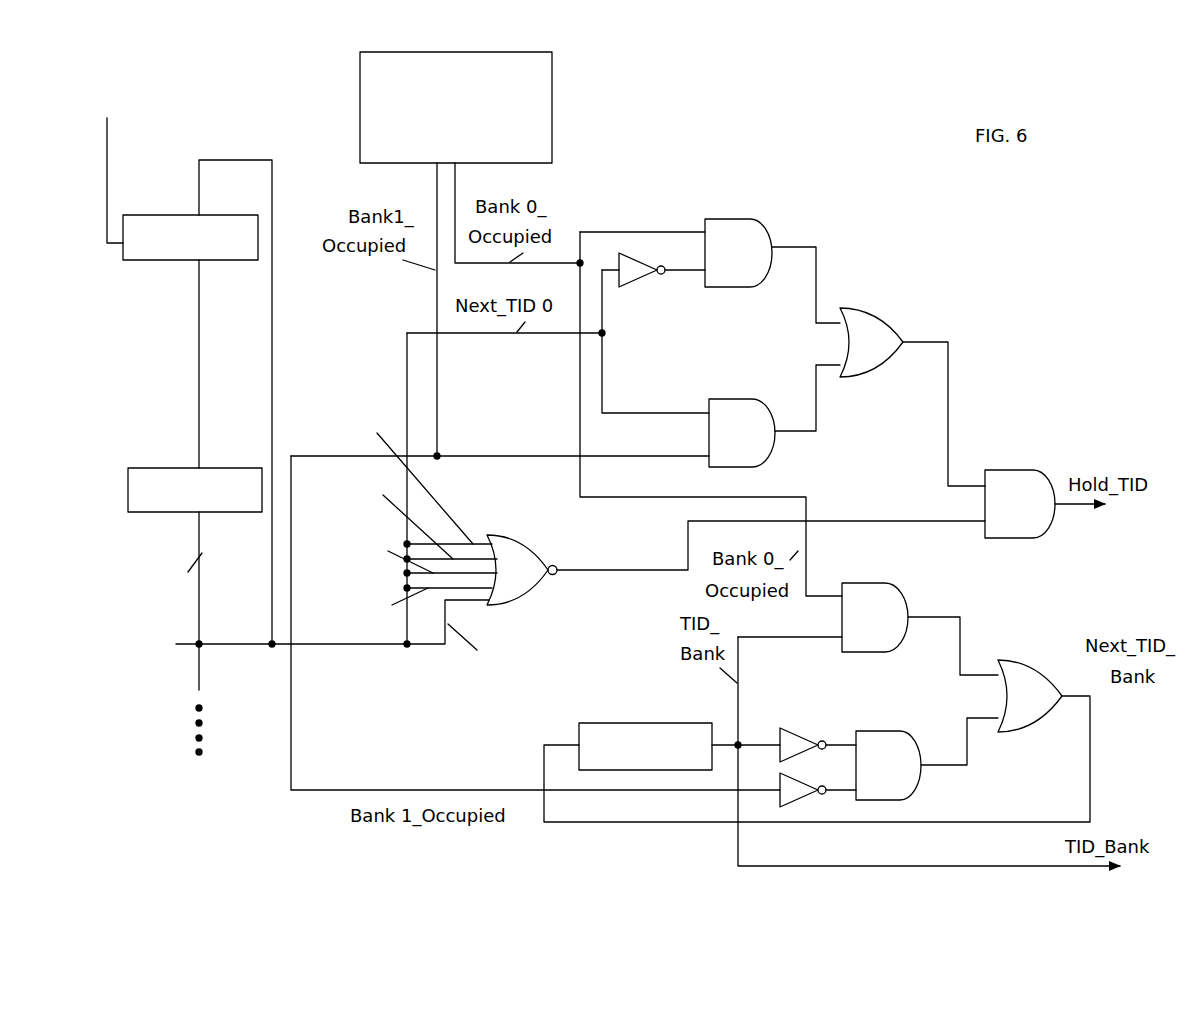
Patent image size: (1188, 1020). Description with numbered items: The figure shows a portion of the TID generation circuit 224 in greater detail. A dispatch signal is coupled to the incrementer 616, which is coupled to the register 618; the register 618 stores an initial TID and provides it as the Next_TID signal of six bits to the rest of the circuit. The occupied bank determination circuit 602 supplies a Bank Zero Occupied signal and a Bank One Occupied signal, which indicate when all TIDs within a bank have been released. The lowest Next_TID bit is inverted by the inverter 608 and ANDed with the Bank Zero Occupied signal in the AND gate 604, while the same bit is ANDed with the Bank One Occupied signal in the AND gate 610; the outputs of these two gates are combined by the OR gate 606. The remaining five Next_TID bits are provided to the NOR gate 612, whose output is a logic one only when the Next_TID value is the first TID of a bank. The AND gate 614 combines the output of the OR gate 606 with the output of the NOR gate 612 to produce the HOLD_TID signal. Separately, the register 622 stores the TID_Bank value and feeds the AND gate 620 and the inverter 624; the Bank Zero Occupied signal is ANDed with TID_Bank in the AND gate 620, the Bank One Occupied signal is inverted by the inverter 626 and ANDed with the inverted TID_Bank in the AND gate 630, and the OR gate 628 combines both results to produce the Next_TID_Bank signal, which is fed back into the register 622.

The TID generation circuit 224 is at (288, 140).
The occupied bank determination circuit 602 is at (553, 82).
The AND gate 604 is at (718, 216).
The OR gate 606 is at (858, 306).
The inverter 608 is at (633, 284).
The AND gate 610 is at (720, 397).
The NOR gate 612 is at (503, 534).
The AND gate 614 is at (1000, 468).
The incrementer 616 is at (168, 215).
The register 618 is at (172, 467).
The AND gate 620 is at (855, 583).
The register 622 is at (665, 723).
The inverter 624 is at (793, 728).
The inverter 626 is at (797, 806).
The OR gate 628 is at (1017, 658).
The AND gate 630 is at (870, 731).